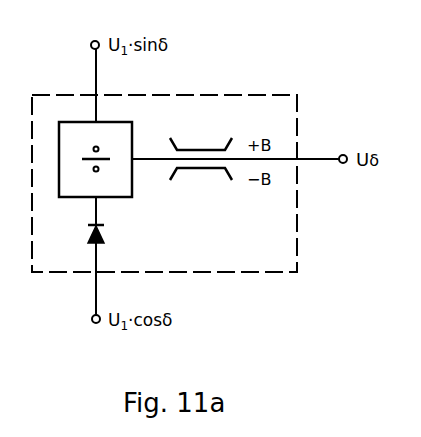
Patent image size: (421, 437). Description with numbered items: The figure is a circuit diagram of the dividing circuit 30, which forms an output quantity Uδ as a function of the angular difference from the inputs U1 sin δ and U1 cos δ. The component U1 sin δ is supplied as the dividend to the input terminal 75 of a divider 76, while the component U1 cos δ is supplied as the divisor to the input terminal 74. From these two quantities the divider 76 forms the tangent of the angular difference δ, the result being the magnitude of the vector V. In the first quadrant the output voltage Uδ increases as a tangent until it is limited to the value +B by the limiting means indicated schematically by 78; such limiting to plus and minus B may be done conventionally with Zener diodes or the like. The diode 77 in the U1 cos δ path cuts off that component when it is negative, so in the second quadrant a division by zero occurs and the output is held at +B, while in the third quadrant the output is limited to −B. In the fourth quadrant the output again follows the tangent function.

The dividing circuit 30 is at (258, 92).
The input terminal 74 is at (92, 322).
The input terminal 75 is at (91, 43).
The divider 76 is at (113, 178).
The diode 77 is at (88, 233).
The limiting means 78 is at (210, 175).